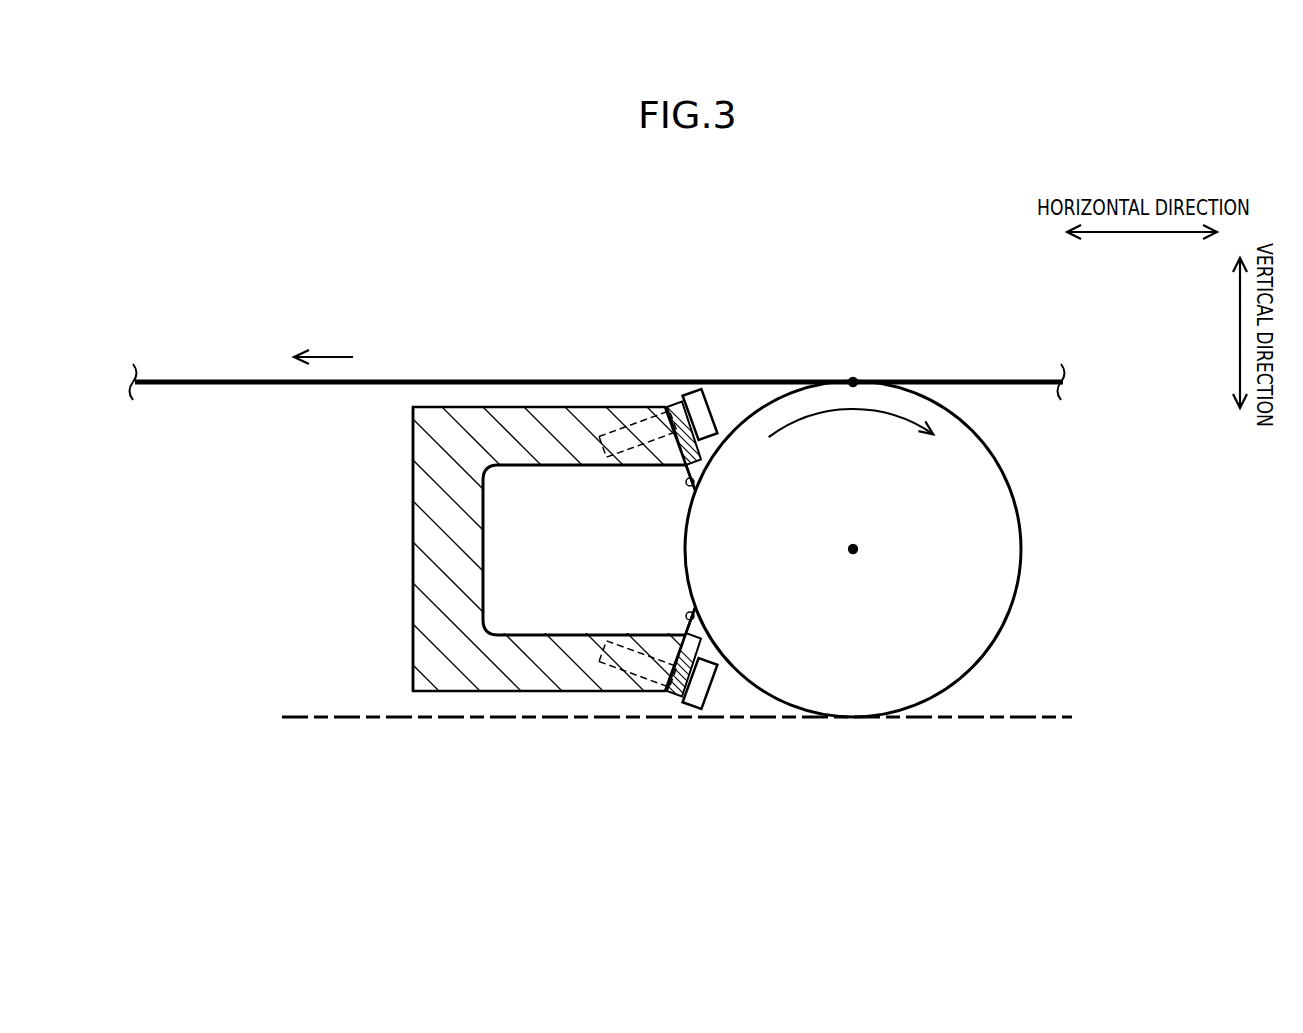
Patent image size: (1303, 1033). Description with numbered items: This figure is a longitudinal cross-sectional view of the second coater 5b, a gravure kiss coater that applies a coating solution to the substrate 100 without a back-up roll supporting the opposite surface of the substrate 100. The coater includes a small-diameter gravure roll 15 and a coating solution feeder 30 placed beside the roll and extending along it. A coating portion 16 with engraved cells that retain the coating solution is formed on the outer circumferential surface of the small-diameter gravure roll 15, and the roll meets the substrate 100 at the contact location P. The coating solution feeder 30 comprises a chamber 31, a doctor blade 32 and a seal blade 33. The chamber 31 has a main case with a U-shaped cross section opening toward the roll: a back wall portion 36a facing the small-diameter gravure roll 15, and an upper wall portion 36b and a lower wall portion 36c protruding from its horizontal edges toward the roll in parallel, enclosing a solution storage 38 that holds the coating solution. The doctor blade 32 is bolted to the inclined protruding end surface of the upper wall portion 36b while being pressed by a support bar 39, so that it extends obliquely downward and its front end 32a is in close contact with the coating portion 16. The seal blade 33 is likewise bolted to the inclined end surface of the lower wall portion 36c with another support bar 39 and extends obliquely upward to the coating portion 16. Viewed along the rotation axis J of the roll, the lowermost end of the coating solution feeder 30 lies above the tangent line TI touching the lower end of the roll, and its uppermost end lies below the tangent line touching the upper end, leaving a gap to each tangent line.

The substrate 100 is at (237, 380).
The tangent line TI is at (1015, 722).
The second coater 5b is at (491, 572).
The coating solution feeder 30 is at (502, 572).
The chamber 31 is at (411, 527).
The back wall portion 36a is at (448, 487).
The upper wall portion 36b is at (575, 423).
The lower wall portion 36c is at (570, 693).
The solution storage 38 is at (578, 568).
The doctor blade 32 is at (636, 512).
The contact portion 32a is at (689, 488).
The seal blade 33 is at (684, 618).
The support bar 39 is at (681, 408).
The small-diameter gravure roll 15 is at (903, 508).
The coating portion 16 is at (1007, 623).
The rotation axis J is at (853, 556).
The contact location P is at (853, 378).